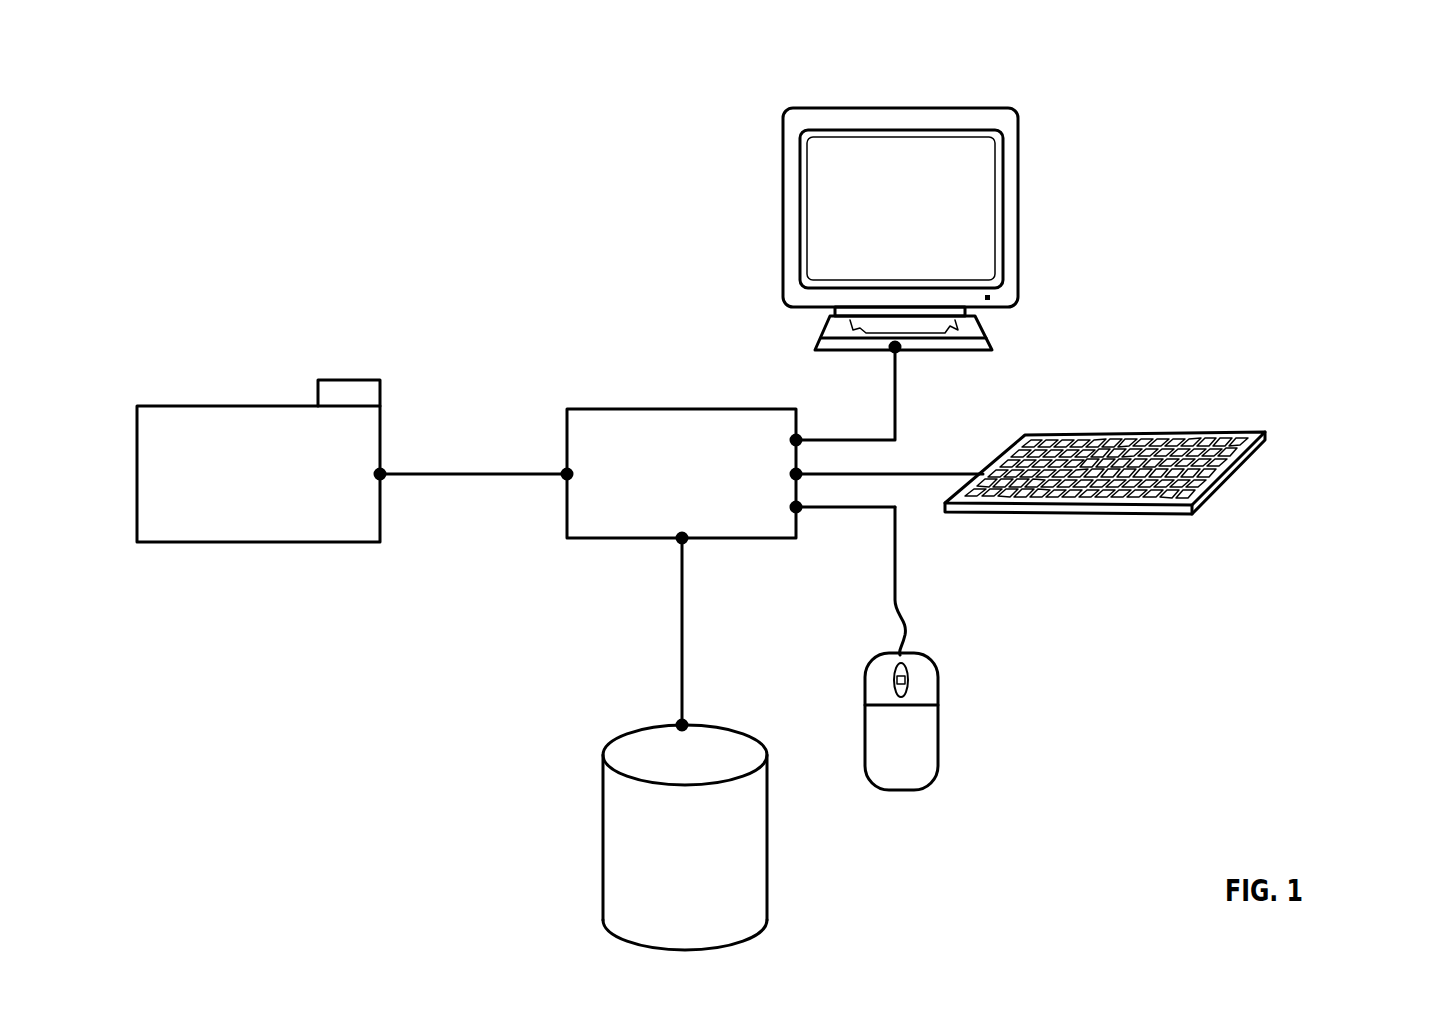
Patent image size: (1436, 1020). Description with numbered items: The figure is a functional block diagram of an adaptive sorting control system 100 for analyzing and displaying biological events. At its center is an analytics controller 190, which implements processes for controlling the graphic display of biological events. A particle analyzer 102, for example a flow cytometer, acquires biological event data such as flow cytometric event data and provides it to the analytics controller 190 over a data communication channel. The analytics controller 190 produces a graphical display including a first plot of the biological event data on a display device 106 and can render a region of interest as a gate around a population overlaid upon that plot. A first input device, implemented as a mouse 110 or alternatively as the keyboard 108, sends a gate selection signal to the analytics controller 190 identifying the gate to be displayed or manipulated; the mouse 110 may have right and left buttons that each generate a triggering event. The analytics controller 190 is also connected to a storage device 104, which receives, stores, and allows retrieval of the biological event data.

The system 100 is at (1288, 121).
The particle analyzer 102 is at (260, 402).
The storage device 104 is at (635, 732).
The display device 106 is at (1020, 235).
The keyboard 108 is at (1148, 518).
The mouse 110 is at (905, 772).
The analytics controller 190 is at (680, 406).